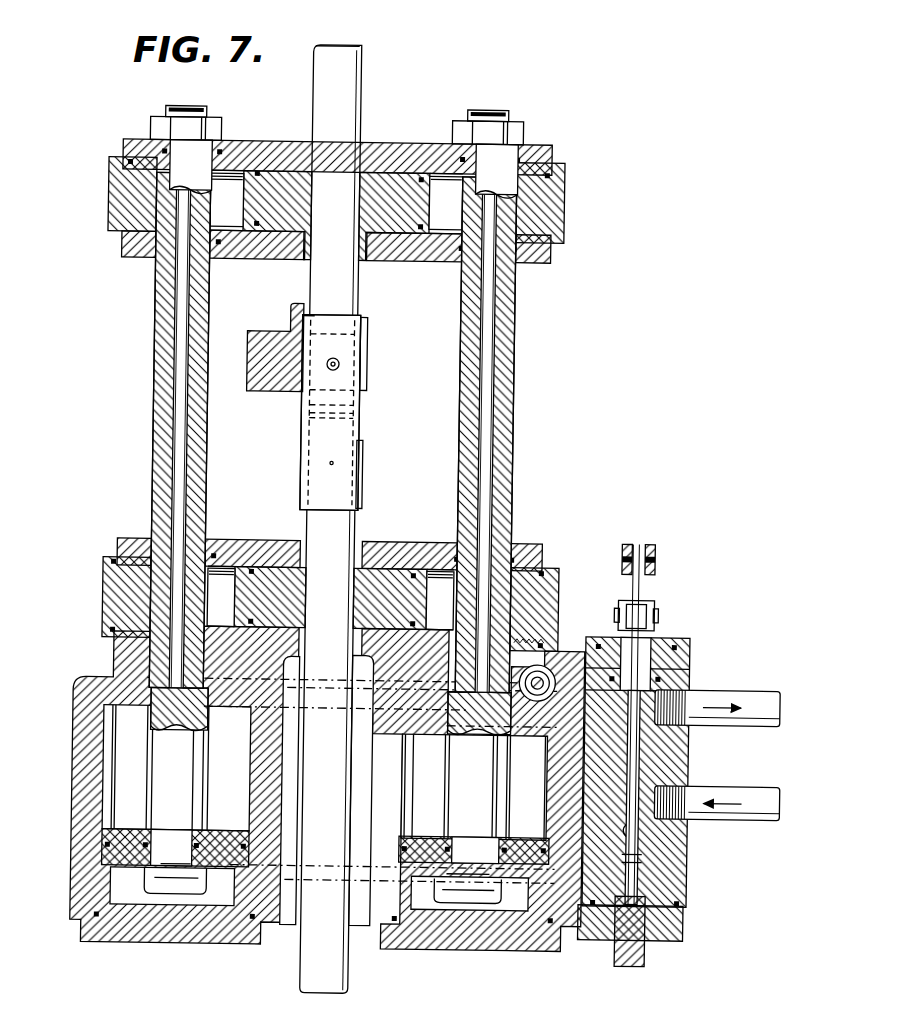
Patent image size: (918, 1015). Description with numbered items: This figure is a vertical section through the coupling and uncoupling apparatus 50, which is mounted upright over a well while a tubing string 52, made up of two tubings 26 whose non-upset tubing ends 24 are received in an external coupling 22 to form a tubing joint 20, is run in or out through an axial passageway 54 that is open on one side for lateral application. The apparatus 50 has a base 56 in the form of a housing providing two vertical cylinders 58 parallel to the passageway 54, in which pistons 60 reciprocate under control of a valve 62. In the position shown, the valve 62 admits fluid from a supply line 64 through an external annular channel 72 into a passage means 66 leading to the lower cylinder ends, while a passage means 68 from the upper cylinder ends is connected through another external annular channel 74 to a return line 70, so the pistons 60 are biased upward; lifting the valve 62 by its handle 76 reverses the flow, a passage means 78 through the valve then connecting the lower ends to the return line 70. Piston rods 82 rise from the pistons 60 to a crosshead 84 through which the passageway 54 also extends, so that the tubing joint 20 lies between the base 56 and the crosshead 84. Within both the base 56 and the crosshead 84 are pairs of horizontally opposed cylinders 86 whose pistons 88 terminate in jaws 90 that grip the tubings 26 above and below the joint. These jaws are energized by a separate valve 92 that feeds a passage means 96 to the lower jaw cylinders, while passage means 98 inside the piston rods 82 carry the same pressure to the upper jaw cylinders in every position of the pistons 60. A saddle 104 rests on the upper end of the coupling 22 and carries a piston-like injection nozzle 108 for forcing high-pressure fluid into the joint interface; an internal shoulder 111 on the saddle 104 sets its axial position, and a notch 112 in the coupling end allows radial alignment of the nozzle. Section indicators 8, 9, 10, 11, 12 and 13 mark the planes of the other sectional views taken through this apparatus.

The section line 8- 8 is at (106, 200).
The section line 9- 9 is at (272, 296).
The section line 10- 10 is at (342, 279).
The section line 11- 11 is at (92, 597).
The section line 12- 12 is at (92, 680).
The section line 13- 13 is at (78, 710).
The tubing joint 20 is at (336, 411).
The external coupling 22 is at (358, 441).
The tubing ends 24 is at (364, 341).
The tubings 26 is at (355, 79).
The apparatus 50 is at (586, 142).
The tubing string 52 is at (359, 48).
The passageway 54 is at (284, 910).
The base 56 is at (82, 819).
The vertical cylinders 58 is at (116, 766).
The pistons 60 is at (127, 907).
The valve 62 is at (656, 766).
The supply line 64 is at (770, 816).
The passage means 66 is at (360, 925).
The passage means 68 is at (350, 719).
The return line 70 is at (727, 686).
The external annular channel 72 is at (650, 858).
The external annular channel 74 is at (660, 715).
The handle 76 is at (657, 553).
The passage means 78 is at (645, 826).
The piston rods 82 is at (156, 411).
The crosshead 84 is at (404, 146).
The horizontally opposed cylinders 86 is at (266, 172).
The pistons 88 is at (287, 172).
The jaws 90 is at (313, 170).
The valve 92 is at (549, 666).
The passage means 96 is at (330, 686).
The passage means 98 is at (180, 340).
The saddle 104 is at (262, 393).
The injection nozzle 108 is at (338, 366).
The internal shoulder 111 is at (301, 320).
The notch 112 is at (342, 318).